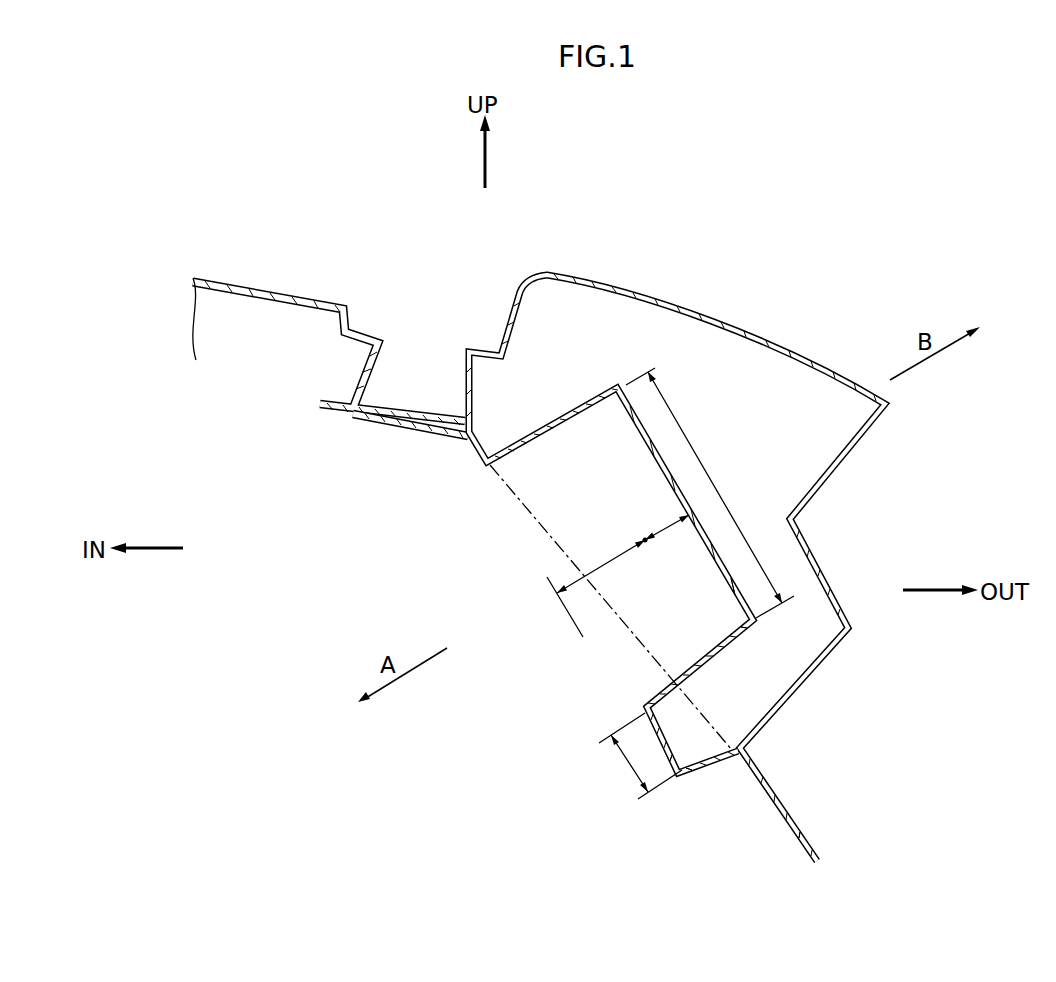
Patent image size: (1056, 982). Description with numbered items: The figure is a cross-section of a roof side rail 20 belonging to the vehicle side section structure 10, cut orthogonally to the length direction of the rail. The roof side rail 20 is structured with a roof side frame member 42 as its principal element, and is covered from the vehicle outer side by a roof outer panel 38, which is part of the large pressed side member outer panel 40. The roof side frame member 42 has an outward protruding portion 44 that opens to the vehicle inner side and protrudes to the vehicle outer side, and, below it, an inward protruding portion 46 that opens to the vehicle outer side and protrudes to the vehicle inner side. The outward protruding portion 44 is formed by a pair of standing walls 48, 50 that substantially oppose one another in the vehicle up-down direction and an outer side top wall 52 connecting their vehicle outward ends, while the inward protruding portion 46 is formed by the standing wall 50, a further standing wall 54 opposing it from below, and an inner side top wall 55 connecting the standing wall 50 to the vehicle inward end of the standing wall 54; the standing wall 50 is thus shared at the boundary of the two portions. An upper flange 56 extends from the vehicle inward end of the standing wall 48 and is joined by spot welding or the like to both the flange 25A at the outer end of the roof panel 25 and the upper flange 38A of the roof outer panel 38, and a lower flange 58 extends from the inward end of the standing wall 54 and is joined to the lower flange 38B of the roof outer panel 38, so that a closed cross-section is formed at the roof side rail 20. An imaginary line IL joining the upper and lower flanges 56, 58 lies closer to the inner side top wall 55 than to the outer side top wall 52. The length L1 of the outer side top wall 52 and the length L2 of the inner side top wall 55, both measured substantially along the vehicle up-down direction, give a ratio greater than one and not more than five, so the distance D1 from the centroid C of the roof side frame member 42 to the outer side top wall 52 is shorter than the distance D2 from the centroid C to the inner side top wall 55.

The vehicle side section structure 10 is at (565, 552).
The roof side rail 20 is at (716, 605).
The roof panel 25 is at (329, 319).
The flange 25A is at (412, 410).
The roof outer panel 38 is at (649, 582).
The side member outer panel 40 is at (787, 305).
The upper flange 38A is at (446, 414).
The lower flange 38B is at (805, 838).
The roof side frame member 42 is at (796, 674).
The outward protruding portion 44 is at (775, 627).
The inward protruding portion 46 is at (685, 747).
The standing wall 48 is at (540, 428).
The standing wall 50 is at (718, 656).
The outer side top wall 52 is at (661, 450).
The standing wall 54 is at (703, 770).
The inner side top wall 55 is at (648, 706).
The upper flange 56 is at (388, 426).
The lower flange 58 is at (796, 848).
The centroid C is at (646, 543).
The distance D1 is at (667, 524).
The distance D2 is at (610, 560).
The length L1 is at (710, 473).
The length L2 is at (627, 764).
The imaginary line IL is at (533, 517).